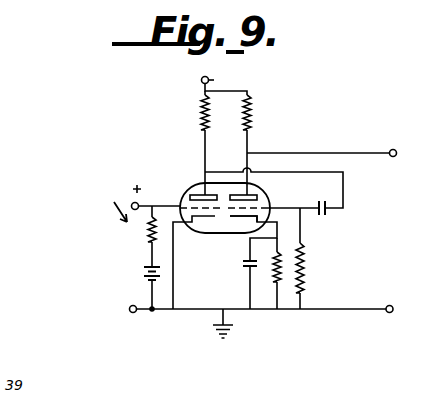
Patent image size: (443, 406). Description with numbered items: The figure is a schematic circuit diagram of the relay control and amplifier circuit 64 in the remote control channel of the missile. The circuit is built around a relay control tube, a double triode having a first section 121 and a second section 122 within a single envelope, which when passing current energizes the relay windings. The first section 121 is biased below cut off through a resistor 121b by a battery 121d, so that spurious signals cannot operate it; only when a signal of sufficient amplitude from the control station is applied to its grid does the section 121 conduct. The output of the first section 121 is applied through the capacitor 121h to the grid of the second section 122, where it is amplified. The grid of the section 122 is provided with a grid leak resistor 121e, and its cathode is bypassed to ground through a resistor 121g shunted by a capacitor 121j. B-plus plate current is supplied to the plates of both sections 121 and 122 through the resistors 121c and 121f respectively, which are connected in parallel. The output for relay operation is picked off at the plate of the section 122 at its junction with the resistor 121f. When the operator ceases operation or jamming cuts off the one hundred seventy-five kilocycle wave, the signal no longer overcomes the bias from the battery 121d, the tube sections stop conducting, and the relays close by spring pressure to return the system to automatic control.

The relay control and amplifier circuit 64 is at (214, 228).
The first tube section 121 is at (198, 185).
The second tube section 122 is at (268, 187).
The resistor 121b is at (155, 241).
The resistor 121c is at (196, 118).
The battery 121d is at (146, 272).
The grid leak resistor 121e is at (302, 259).
The resistor 121f is at (254, 118).
The resistor 121g is at (279, 275).
The capacitor 121h is at (320, 216).
The capacitor 121j is at (236, 263).